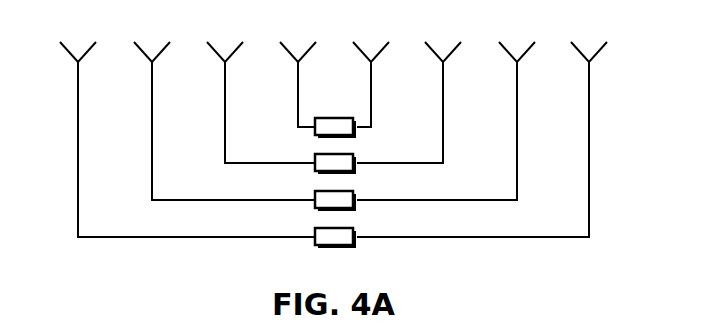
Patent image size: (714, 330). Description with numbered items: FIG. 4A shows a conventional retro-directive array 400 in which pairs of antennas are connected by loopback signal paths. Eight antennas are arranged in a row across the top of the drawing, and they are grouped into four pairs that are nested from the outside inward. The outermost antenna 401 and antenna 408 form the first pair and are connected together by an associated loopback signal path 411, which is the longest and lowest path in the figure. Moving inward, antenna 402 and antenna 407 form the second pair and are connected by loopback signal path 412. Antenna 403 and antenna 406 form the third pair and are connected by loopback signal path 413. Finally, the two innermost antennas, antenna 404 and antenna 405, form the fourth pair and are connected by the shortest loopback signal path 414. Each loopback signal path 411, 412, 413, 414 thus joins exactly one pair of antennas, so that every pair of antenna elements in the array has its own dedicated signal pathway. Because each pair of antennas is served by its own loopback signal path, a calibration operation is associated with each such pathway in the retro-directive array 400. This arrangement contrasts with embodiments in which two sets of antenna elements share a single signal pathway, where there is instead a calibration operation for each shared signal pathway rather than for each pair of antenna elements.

The retro-directive array 400 is at (350, 19).
The antenna 401 is at (175, 139).
The antenna 402 is at (212, 121).
The antenna 403 is at (248, 102).
The antenna 404 is at (285, 84).
The antenna 405 is at (360, 84).
The antenna 406 is at (409, 102).
The antenna 407 is at (446, 121).
The antenna 408 is at (482, 139).
The loopback signal path 411 is at (198, 238).
The loopback signal path 412 is at (234, 201).
The loopback signal path 413 is at (270, 164).
The loopback signal path 414 is at (309, 128).